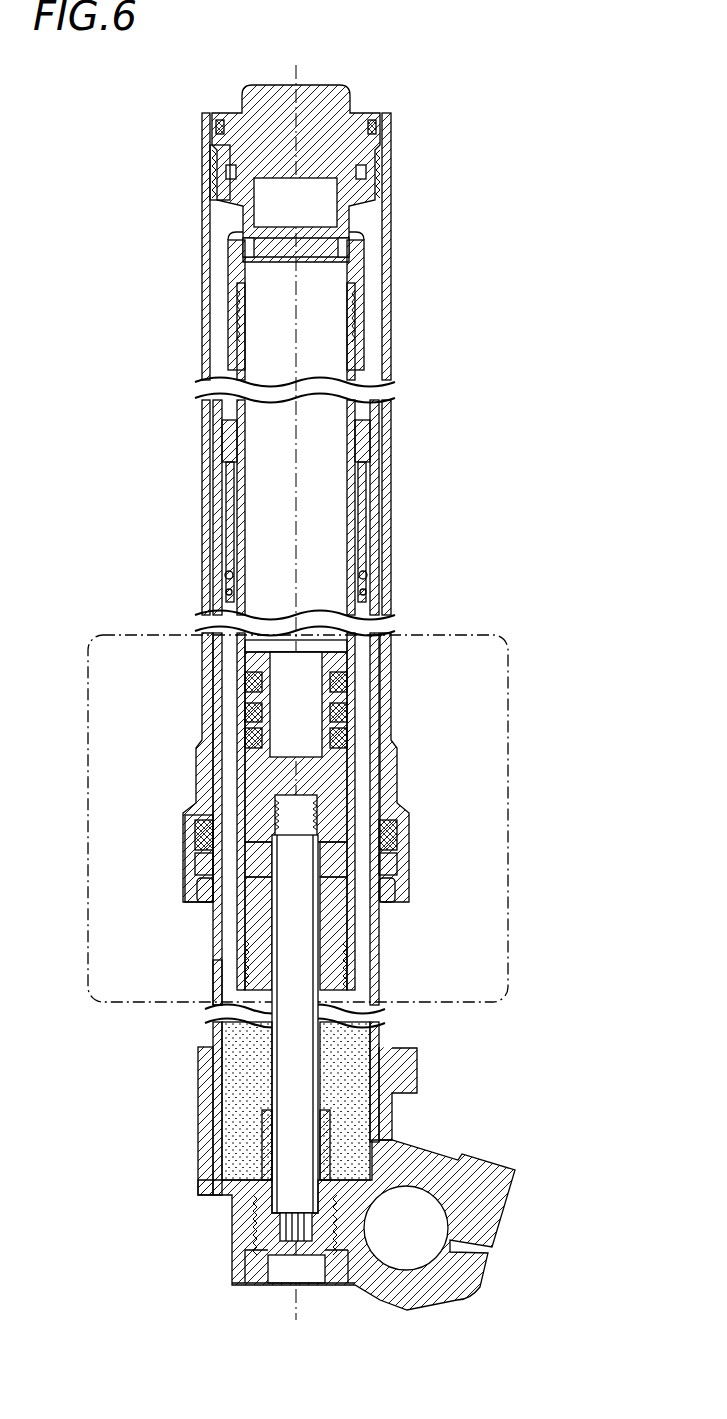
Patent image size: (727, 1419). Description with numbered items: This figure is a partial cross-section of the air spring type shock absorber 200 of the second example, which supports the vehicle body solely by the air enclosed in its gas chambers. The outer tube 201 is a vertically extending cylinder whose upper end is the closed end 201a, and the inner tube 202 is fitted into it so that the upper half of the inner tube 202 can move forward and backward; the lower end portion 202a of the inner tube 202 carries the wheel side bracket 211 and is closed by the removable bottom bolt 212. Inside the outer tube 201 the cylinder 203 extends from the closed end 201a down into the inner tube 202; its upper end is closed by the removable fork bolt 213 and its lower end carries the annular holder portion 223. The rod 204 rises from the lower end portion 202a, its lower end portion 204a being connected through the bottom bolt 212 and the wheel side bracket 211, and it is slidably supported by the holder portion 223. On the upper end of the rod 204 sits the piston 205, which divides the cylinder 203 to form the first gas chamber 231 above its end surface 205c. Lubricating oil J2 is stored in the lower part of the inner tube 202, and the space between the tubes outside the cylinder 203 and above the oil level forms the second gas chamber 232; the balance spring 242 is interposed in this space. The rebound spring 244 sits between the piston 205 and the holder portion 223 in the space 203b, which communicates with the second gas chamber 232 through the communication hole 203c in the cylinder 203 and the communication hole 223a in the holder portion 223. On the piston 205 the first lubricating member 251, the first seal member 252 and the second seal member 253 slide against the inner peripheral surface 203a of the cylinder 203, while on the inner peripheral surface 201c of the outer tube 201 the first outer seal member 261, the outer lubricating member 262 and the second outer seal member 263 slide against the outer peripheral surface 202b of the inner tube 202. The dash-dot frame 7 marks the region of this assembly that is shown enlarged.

The air spring type shock absorber 200 is at (518, 188).
The fork bolt 213 is at (325, 120).
The outer tube 201 is at (200, 249).
The closed end of the outer tube 201a is at (206, 168).
The inner peripheral surface of the outer tube 201c is at (230, 300).
The cylinder 203 is at (236, 418).
The inner peripheral surface of the cylinder 203a is at (230, 440).
The balance spring 242 is at (368, 482).
The first gas chamber 231 is at (320, 540).
The end surface of the piston 205c is at (352, 632).
The enlarged region 7 is at (506, 640).
The piston 205 is at (311, 709).
The first lubricating member 251 is at (348, 682).
The first seal member 252 is at (348, 712).
The second seal member 253 is at (348, 738).
The rebound spring 244 is at (335, 800).
The space containing the rebound spring 203b is at (198, 832).
The second outer seal member 263 is at (400, 835).
The outer lubricating member 262 is at (398, 866).
The first outer seal member 261 is at (402, 904).
The inner tube 202 is at (212, 950).
The holder portion 223 is at (250, 912).
The communication hole of the cylinder 203c is at (352, 866).
The communication hole of the holder portion 223a is at (258, 962).
The second gas chamber 232 is at (360, 975).
The outer peripheral surface of the inner tube 202b is at (207, 988).
The lubricating oil J2 is at (350, 1052).
The rod 204 is at (290, 1085).
The lower end portion of the inner tube 202a is at (205, 1135).
The wheel side bracket 211 is at (475, 1185).
The lower end portion of the rod 204a is at (292, 1203).
The bottom bolt 212 is at (285, 1262).